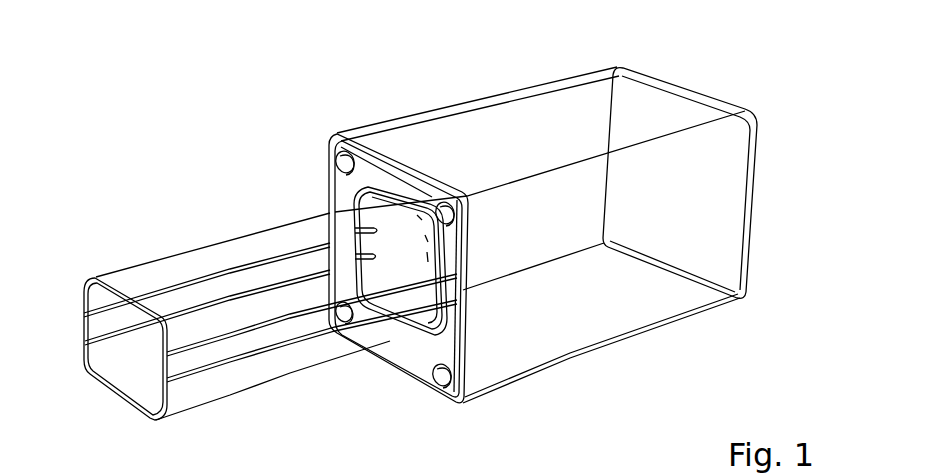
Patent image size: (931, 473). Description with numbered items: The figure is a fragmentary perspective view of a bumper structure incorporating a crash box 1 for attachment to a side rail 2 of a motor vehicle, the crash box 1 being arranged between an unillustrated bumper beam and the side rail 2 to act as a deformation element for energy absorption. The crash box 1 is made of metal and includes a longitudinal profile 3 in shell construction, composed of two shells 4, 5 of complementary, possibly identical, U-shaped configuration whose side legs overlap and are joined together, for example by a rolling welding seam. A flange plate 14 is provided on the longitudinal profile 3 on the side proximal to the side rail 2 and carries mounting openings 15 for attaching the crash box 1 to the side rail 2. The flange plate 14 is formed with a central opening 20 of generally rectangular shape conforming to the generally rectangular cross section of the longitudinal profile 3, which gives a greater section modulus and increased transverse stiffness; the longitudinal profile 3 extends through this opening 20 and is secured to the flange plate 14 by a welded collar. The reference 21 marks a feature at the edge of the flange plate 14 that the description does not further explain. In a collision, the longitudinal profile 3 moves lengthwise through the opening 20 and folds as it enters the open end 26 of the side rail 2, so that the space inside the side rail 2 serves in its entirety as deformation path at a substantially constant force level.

The crash box 1 is at (232, 166).
The side rail 2 is at (575, 76).
The longitudinal profile 3 is at (283, 379).
The shell 4 is at (180, 257).
The shell 5 is at (213, 398).
The flange plate 14 is at (368, 162).
The mounting opening 15 is at (440, 385).
The central opening 20 is at (422, 352).
The edge of flange plate 21 is at (470, 357).
The open end 26 is at (537, 352).